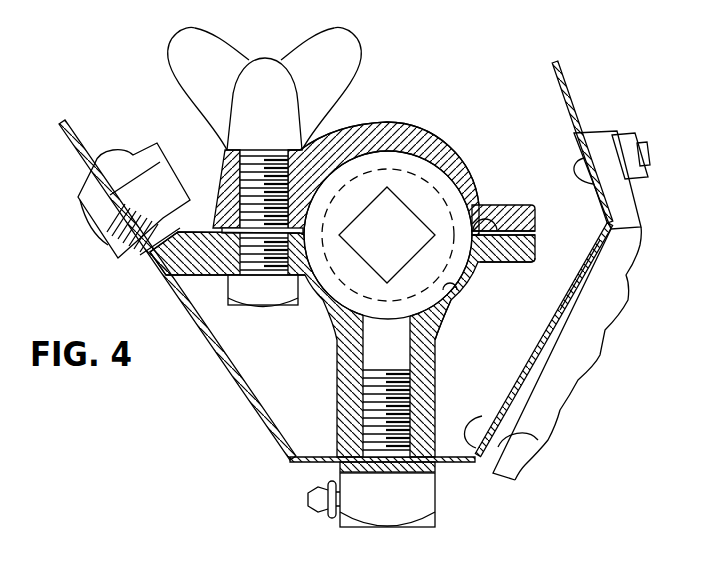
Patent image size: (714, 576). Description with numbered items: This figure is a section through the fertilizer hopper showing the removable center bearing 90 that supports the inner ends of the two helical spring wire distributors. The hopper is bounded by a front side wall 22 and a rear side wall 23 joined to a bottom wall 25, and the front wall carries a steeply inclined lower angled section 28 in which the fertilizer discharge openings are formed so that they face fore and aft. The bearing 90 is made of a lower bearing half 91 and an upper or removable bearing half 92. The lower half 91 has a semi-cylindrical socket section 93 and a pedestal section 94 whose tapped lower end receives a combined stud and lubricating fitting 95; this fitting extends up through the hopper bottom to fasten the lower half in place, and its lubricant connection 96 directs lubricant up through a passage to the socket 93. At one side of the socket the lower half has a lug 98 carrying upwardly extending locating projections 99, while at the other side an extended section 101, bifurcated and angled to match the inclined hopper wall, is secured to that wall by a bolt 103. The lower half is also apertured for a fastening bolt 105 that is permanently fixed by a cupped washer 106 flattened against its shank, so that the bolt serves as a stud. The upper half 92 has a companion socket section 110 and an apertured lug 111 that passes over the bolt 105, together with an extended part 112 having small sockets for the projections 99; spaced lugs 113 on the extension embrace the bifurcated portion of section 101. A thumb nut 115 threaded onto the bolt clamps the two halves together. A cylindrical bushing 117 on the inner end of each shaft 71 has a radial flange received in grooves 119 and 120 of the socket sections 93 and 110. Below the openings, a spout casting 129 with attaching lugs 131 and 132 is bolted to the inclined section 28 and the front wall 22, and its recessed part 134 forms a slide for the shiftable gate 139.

The front side wall 22 is at (567, 100).
The rear side wall 23 is at (225, 367).
The bottom wall 25 is at (305, 461).
The lower angled section 28 is at (505, 398).
The shaft 71 is at (393, 221).
The center bearing 90 is at (461, 126).
The lower bearing half 91 is at (328, 372).
The upper bearing half 92 is at (404, 120).
The semi-cylindrical socket section 93 is at (455, 322).
The pedestal section 94 is at (345, 402).
The combined stud and lubricating fitting 95 is at (392, 503).
The lubricant connection 96 is at (310, 502).
The lug 98 is at (520, 261).
The locating projections 99 is at (505, 238).
The extended section 101 is at (188, 264).
The bolt 103 is at (100, 223).
The fastening bolt 105 is at (268, 298).
The cupped washer 106 is at (292, 226).
The companion socket section 110 is at (458, 153).
The apertured lug 111 is at (213, 178).
The extended part 112 is at (538, 218).
The lugs 113 is at (170, 226).
The thumb nut 115 is at (270, 72).
The cylindrical bushing 117 is at (455, 203).
The groove 119 is at (470, 287).
The groove 120 is at (357, 180).
The spout casting 129 is at (603, 320).
The attaching lug 131 is at (605, 147).
The attaching lug 132 is at (530, 430).
The recessed part 134 is at (547, 333).
The shiftable gate 139 is at (571, 292).